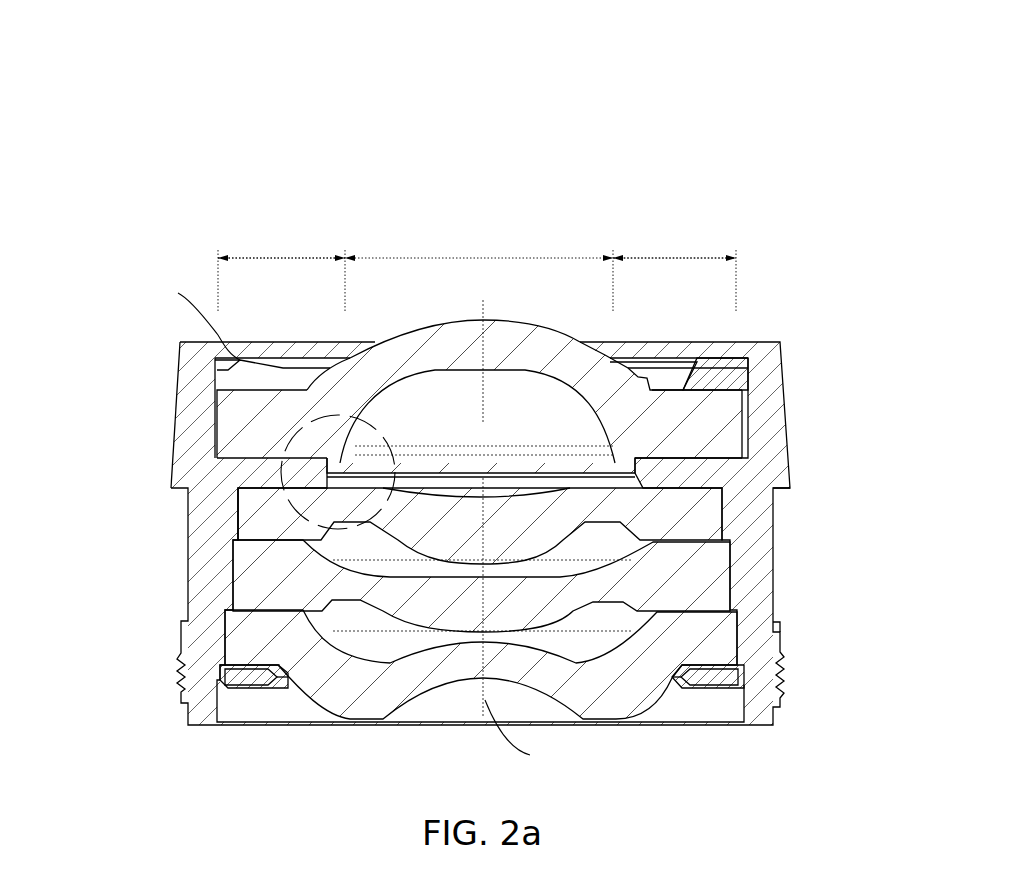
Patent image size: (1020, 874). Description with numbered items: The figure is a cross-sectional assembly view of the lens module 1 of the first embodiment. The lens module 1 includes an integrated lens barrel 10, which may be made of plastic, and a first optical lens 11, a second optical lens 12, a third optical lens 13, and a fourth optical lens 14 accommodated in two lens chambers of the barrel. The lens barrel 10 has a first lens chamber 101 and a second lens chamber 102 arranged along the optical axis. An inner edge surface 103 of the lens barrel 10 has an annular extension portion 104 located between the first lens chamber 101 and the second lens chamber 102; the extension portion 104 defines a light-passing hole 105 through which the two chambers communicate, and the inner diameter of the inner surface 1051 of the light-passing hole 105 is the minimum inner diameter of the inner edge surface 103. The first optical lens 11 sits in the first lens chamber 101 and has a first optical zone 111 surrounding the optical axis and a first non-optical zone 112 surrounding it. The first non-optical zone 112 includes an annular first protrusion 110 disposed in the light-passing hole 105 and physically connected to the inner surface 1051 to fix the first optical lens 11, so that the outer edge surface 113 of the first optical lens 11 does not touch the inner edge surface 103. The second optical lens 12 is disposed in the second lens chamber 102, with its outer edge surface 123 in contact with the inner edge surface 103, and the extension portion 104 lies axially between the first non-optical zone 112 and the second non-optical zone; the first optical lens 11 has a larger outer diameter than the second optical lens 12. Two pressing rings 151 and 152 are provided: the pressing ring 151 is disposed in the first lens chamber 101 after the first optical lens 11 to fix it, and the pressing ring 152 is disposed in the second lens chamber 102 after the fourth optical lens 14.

The lens module 1 is at (377, 125).
The lens barrel 10 is at (471, 533).
The first optical lens 11 is at (475, 382).
The second optical lens 12 is at (690, 515).
The third optical lens 13 is at (698, 577).
The fourth optical lens 14 is at (708, 647).
The first lens chamber 101 is at (747, 398).
The second lens chamber 102 is at (740, 632).
The inner edge surface 103 is at (742, 423).
The extension portion 104 is at (297, 473).
The light-passing hole 105 is at (478, 407).
The inner surface of the light-passing hole 1051 is at (620, 463).
The first protrusion 110 is at (333, 460).
The first optical zone 111 is at (483, 255).
The first non-optical zone 112 is at (262, 252).
The outer edge surface of the first optical lens 113 is at (217, 422).
The outer edge surface of the second optical lens 123 is at (235, 518).
The pressing ring 151 is at (708, 372).
The pressing ring 152 is at (718, 672).